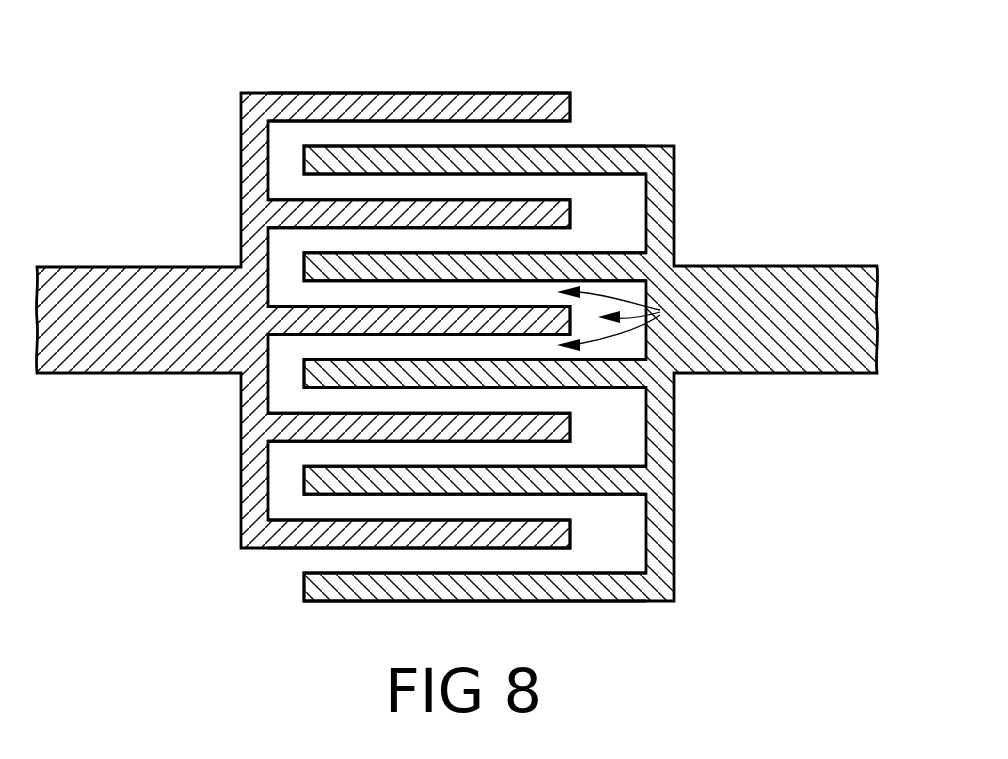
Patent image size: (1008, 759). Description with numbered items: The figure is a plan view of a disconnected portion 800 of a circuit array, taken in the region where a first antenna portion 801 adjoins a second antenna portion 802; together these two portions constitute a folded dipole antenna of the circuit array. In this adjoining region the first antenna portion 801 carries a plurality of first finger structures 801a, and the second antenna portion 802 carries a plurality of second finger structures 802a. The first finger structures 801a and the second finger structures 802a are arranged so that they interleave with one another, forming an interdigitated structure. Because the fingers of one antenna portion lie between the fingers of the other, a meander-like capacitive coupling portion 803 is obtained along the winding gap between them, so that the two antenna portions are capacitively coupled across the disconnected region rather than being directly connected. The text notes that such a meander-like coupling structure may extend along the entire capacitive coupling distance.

The disconnected portion 800 is at (456, 316).
The first antenna portion 801 is at (303, 289).
The first finger structures 801a is at (280, 213).
The second antenna portion 802 is at (591, 339).
The second finger structures 802a is at (607, 248).
The meander-like capacitive coupling portion 803 is at (634, 318).